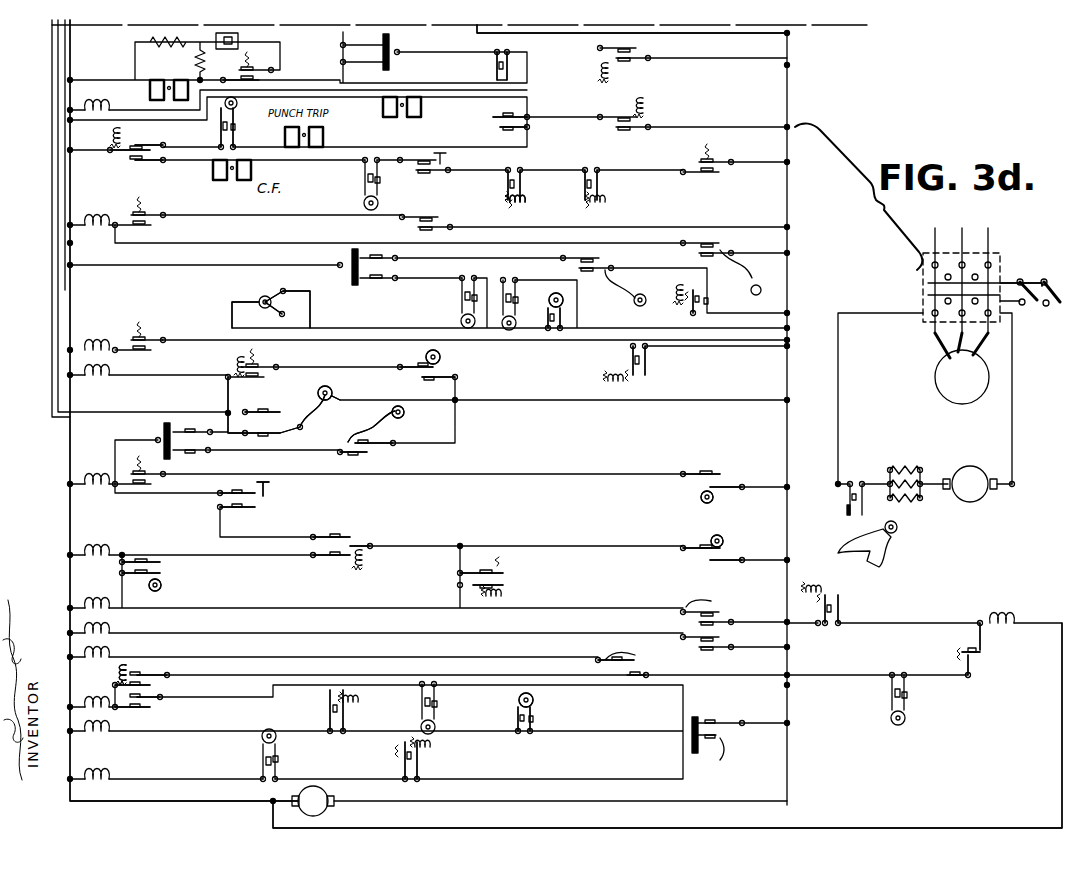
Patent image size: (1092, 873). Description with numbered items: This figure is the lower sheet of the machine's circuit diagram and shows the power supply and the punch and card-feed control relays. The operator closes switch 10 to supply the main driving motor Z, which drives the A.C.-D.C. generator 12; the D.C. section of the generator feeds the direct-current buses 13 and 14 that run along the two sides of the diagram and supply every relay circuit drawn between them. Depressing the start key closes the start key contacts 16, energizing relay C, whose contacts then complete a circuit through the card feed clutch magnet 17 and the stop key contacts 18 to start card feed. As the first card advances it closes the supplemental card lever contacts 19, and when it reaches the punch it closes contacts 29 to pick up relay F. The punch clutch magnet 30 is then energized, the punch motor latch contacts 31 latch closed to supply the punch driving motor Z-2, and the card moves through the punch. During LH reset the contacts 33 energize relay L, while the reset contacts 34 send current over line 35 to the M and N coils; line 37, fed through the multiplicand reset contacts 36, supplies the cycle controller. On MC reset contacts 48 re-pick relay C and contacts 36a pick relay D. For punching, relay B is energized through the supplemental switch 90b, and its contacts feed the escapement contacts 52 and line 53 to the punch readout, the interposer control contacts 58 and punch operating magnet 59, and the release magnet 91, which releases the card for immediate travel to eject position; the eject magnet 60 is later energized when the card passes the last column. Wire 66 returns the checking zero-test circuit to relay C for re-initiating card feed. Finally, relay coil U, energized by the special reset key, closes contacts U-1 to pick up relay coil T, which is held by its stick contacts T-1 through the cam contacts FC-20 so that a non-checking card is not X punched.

The switch 10 is at (1052, 305).
The A.C.-D.C. generator 12 is at (273, 813).
The D.C. bus 13 is at (1070, 700).
The D.C. bus 14 is at (798, 555).
The start key contacts 16 is at (238, 493).
The card feed clutch magnet 17 is at (223, 180).
The stop key contacts 18 is at (450, 167).
The supplemental card lever contacts 19 is at (720, 617).
The contacts 29 is at (640, 672).
The punch clutch magnet 30 is at (323, 135).
The punch motor latch contacts 31 is at (857, 507).
The contacts 33 is at (722, 248).
The reset contacts 34 is at (603, 263).
The line 35 is at (27, 230).
The multiplicand reset contacts 36 is at (283, 413).
The contacts 36a is at (280, 430).
The line 37 is at (192, 412).
The contacts 48 is at (372, 448).
The escapement contacts 52 is at (495, 62).
The line 53 is at (330, 28).
The interposer control contacts 58 is at (262, 72).
The punch operating magnet 59 is at (160, 80).
The eject magnet 60 is at (421, 107).
The wire 66 is at (55, 265).
The supplemental switch 90b is at (277, 296).
The release magnet 91 is at (125, 108).
The main driving motor Z is at (962, 377).
The punch driving motor Z-2 is at (973, 490).
The relay coil U is at (823, 577).
The relay contacts U-1 is at (840, 610).
The relay coil T is at (1017, 615).
The stick contacts T-1 is at (980, 655).
The cam contacts FC-20 is at (905, 690).